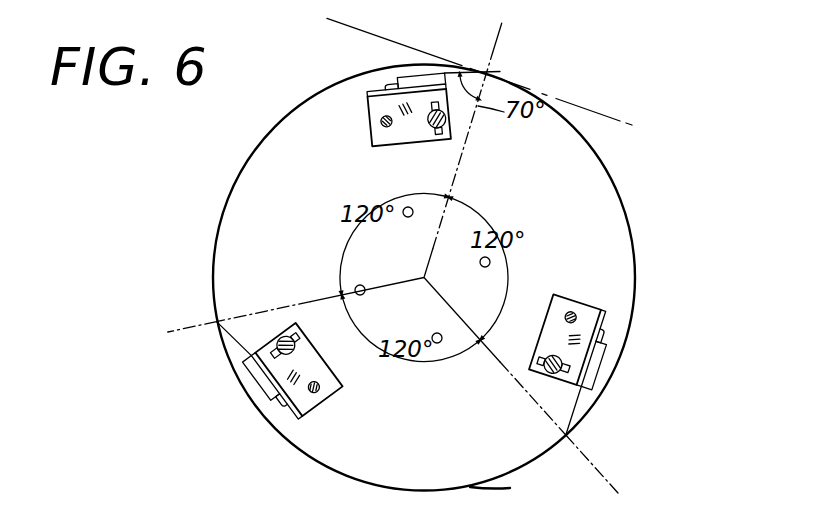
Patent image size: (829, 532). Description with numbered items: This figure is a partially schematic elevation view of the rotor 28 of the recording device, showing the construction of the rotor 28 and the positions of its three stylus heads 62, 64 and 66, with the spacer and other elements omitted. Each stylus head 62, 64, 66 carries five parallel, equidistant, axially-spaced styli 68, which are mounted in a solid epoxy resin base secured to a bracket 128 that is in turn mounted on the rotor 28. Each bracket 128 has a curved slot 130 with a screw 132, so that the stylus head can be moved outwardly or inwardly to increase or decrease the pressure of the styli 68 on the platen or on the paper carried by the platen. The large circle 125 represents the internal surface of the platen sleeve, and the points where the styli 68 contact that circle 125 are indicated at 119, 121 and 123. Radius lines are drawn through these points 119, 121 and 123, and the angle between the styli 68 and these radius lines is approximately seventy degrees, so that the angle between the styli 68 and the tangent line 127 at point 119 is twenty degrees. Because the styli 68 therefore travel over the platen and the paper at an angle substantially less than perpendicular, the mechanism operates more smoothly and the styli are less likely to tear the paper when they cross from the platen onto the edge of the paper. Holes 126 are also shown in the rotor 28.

The rotor 28 is at (606, 208).
The stylus head 62 is at (424, 74).
The stylus head 64 is at (262, 384).
The stylus head 66 is at (609, 362).
The styli 68 is at (488, 72).
The point of contact 119 is at (500, 72).
The point of contact 121 is at (567, 440).
The point of contact 123 is at (215, 320).
The circle 125 is at (481, 487).
The mounting holes 126 is at (412, 207).
The tangent line 127 is at (584, 100).
The bracket 128 is at (369, 127).
The curved slot 130 is at (437, 136).
The screw 132 is at (427, 117).